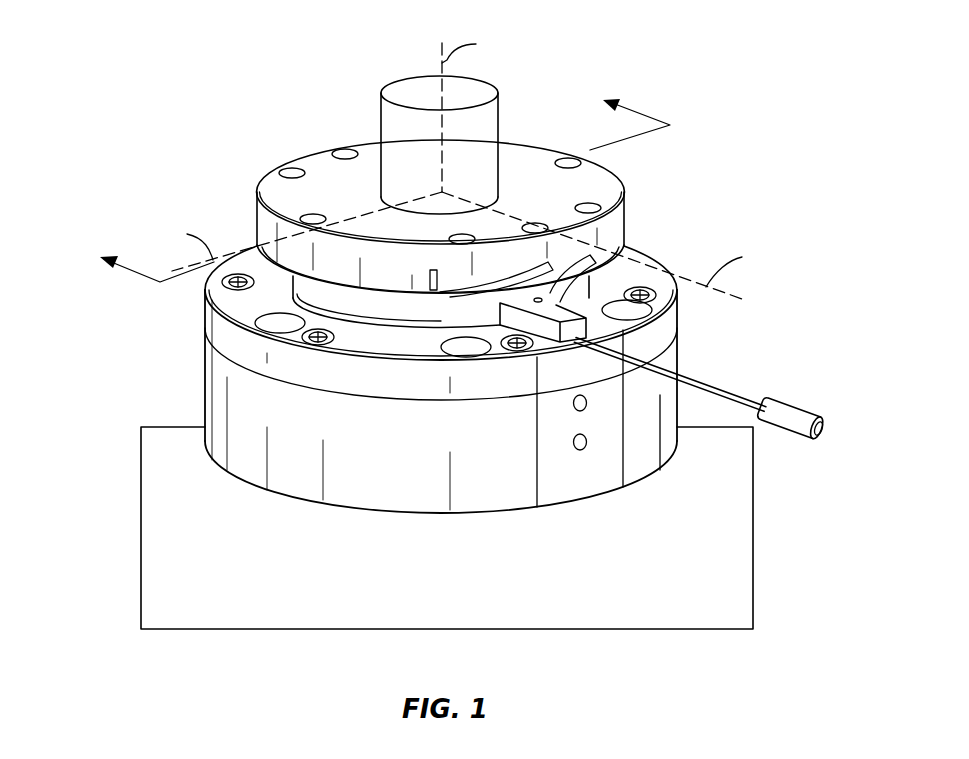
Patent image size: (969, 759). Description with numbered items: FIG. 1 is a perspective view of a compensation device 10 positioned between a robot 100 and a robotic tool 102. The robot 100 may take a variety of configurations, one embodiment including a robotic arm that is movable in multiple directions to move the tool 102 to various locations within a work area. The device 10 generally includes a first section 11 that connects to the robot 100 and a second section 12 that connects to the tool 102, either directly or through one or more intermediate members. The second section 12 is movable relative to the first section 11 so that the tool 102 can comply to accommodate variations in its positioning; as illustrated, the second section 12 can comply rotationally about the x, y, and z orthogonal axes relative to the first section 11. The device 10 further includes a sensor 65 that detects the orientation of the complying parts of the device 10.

The testing apparatus 10 is at (205, 100).
The base 11 is at (223, 390).
The platform disk 12 is at (268, 188).
The sensor probe 65 is at (713, 386).
The support table 100 is at (175, 530).
The test specimen cylinder 102 is at (487, 122).